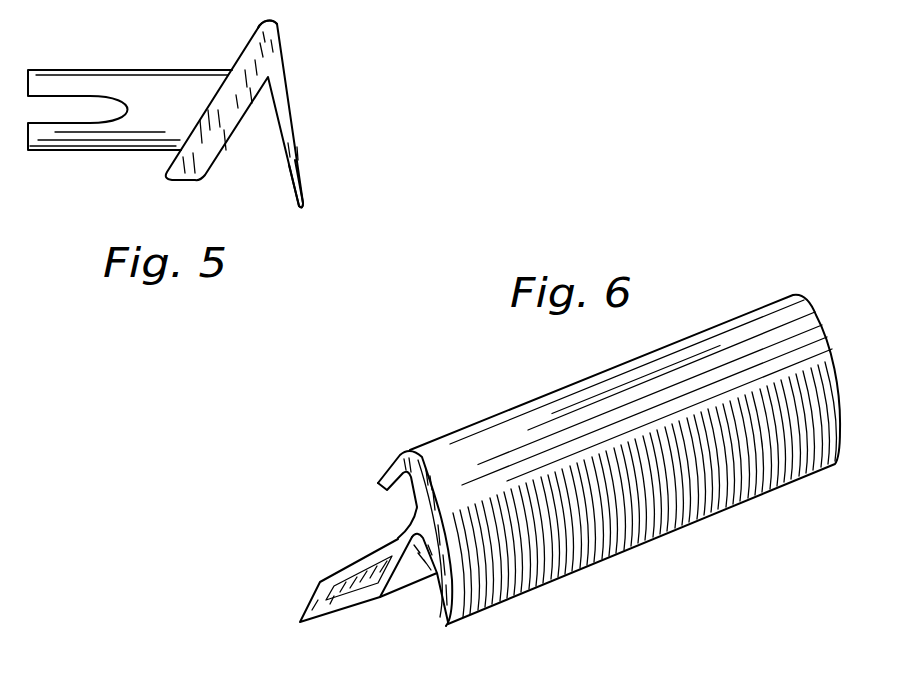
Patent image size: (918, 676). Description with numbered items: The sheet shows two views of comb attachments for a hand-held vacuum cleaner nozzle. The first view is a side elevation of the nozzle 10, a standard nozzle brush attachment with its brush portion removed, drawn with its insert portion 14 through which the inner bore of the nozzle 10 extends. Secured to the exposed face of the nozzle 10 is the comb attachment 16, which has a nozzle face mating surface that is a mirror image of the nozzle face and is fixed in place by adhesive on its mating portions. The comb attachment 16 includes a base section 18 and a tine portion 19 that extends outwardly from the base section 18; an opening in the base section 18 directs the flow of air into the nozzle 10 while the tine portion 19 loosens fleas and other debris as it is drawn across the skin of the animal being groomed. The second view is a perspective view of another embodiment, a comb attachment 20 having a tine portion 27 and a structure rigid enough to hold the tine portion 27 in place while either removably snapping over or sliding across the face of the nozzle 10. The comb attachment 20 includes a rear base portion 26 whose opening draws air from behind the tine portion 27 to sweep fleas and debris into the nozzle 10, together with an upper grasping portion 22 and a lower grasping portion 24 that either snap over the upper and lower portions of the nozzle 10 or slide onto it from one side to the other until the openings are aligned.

In FIG. 5, the nozzle 10 is at (178, 118).
In FIG. 5, the insert portion 14 is at (145, 85).
In FIG. 5, the comb attachment 16 is at (258, 28).
In FIG. 5, the base section 18 is at (252, 118).
In FIG. 5, the tine portion 19 is at (286, 183).
In FIG. 6, the comb attachment 20 is at (550, 424).
In FIG. 6, the upper grasping portion 22 is at (387, 478).
In FIG. 6, the lower grasping portion 24 is at (320, 595).
In FIG. 6, the rear base portion 26 is at (393, 543).
In FIG. 6, the tine portion 27 is at (681, 537).